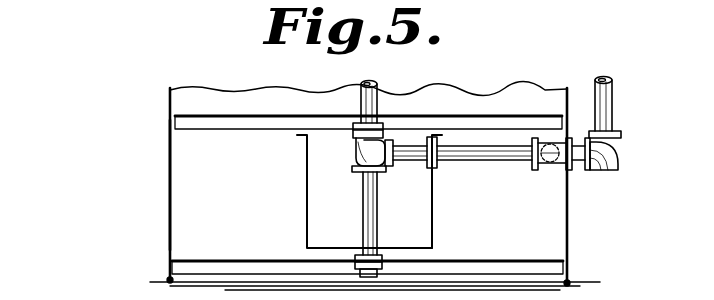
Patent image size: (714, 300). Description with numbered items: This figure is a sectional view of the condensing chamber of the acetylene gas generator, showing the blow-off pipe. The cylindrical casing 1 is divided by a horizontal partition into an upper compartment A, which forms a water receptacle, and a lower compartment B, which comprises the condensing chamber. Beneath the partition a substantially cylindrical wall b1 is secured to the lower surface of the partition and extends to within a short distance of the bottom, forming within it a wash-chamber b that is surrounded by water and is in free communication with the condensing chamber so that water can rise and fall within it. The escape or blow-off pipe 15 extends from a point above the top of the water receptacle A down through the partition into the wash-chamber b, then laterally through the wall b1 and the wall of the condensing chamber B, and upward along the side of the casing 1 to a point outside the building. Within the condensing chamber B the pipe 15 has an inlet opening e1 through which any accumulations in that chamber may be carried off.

The upper compartment A is at (180, 101).
The cylindrical casing 1 is at (170, 216).
The lower compartment B is at (367, 195).
The wash-chamber b is at (364, 191).
The cylindrical wall b1 is at (433, 228).
The blow-off pipe 15 is at (370, 222).
The inlet opening e1 is at (551, 168).